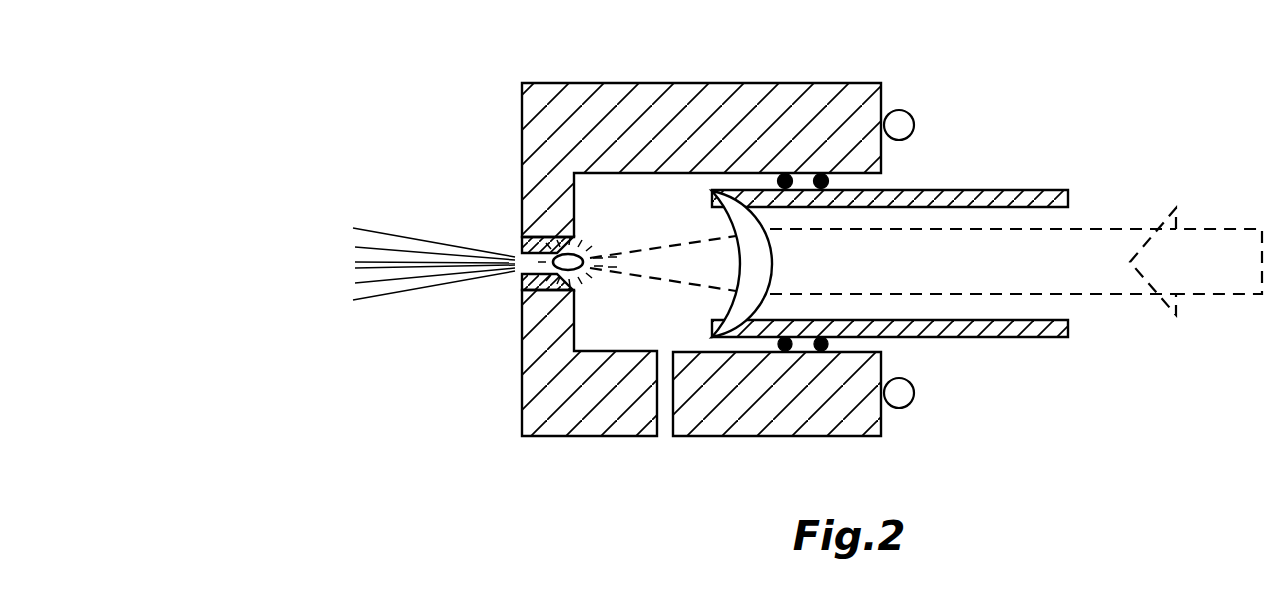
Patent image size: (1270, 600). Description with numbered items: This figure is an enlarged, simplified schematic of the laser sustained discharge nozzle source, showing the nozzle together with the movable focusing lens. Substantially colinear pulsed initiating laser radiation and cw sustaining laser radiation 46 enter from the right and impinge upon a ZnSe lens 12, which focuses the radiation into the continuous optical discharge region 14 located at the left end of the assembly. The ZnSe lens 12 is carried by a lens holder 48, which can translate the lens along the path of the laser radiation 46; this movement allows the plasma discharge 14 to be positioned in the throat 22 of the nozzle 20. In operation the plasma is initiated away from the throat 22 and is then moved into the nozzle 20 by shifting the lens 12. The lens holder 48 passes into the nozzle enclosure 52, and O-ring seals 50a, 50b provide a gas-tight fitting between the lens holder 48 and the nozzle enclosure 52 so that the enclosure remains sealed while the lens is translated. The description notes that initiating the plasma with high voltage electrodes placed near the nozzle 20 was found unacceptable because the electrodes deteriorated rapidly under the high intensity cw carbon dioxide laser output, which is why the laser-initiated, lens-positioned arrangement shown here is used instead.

The ZnSe lens 12 is at (772, 250).
The continuous optical discharge region 14 is at (587, 266).
The nozzle 20 is at (522, 239).
The throat 22 is at (522, 292).
The laser radiation 46 is at (1216, 292).
The lens holder 48 is at (1017, 191).
The O-ring seal 50a is at (778, 182).
The O-ring seal 50b is at (823, 186).
The nozzle enclosure 52 is at (722, 83).